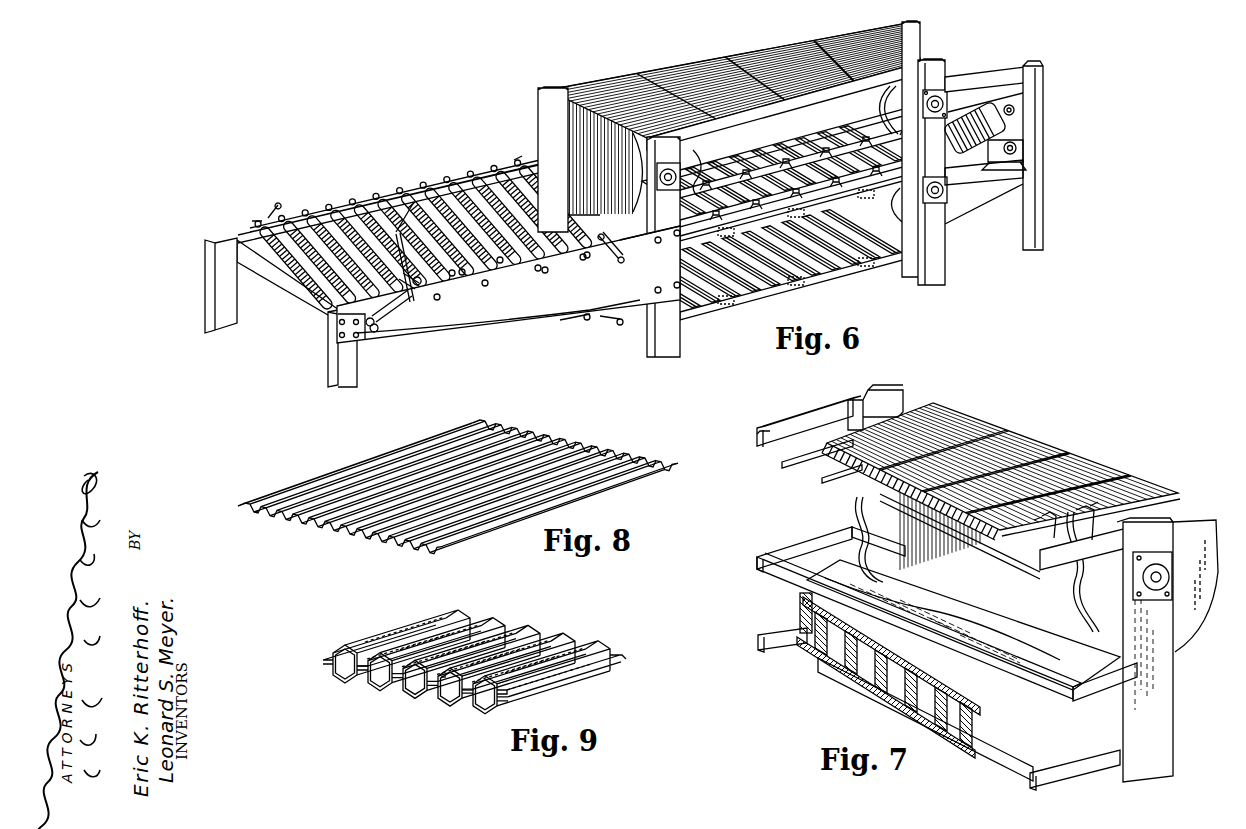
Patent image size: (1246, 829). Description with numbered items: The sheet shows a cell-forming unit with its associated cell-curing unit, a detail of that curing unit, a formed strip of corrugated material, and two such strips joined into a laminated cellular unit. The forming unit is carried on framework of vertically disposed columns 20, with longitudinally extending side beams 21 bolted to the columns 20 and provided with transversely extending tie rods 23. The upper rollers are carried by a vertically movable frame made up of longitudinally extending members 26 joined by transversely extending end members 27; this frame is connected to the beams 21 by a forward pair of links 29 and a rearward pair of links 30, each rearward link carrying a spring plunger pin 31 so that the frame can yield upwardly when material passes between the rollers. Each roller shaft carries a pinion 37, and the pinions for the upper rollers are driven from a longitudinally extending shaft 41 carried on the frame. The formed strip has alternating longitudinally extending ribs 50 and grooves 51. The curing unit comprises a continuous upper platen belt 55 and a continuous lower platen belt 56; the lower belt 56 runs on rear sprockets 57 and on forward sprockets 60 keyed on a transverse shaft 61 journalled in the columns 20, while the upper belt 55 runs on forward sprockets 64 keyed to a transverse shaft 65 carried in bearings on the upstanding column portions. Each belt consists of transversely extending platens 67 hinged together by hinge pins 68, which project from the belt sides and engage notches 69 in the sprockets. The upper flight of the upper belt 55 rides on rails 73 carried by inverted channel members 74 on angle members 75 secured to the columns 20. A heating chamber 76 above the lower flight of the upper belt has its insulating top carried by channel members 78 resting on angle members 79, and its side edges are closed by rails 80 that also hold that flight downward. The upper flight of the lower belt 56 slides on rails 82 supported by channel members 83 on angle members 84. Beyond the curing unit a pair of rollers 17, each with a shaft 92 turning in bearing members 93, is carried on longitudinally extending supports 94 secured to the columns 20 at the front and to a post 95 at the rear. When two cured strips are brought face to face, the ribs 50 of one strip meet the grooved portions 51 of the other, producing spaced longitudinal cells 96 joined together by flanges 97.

In FIG. 6, the rollers 17 is at (965, 130).
In FIG. 6, the columns 20 is at (211, 299).
In FIG. 7, the columns 20 is at (1160, 700).
In FIG. 6, the side beams 21 is at (482, 314).
In FIG. 6, the tie rods 23 is at (545, 273).
In FIG. 6, the longitudinally extending members 26 is at (464, 275).
In FIG. 6, the end members 27 is at (300, 280).
In FIG. 6, the forward links 29 is at (613, 249).
In FIG. 6, the rearward links 30 is at (405, 307).
In FIG. 6, the pin 31 is at (384, 320).
In FIG. 6, the pinion 37 is at (337, 208).
In FIG. 6, the shaft 41 is at (394, 190).
In FIG. 8, the ribs 50 is at (262, 497).
In FIG. 9, the ribs 50 is at (345, 648).
In FIG. 8, the grooves 51 is at (257, 513).
In FIG. 9, the grooves 51 is at (362, 653).
In FIG. 6, the upper platen belt 55 is at (689, 68).
In FIG. 6, the lower platen belt 56 is at (816, 266).
In FIG. 6, the sprockets 57 is at (612, 318).
In FIG. 6, the sprockets 60 is at (900, 191).
In FIG. 6, the shaft 61 is at (944, 199).
In FIG. 6, the forward sprockets 64 is at (894, 118).
In FIG. 7, the forward sprockets 64 is at (1175, 640).
In FIG. 6, the upper bearing 65 is at (942, 100).
In FIG. 7, the upper bearing 65 is at (1169, 577).
In FIG. 6, the platens 67 is at (640, 94).
In FIG. 7, the platens 67 is at (838, 442).
In FIG. 7, the hinge pins 68 is at (1046, 520).
In FIG. 7, the notches 69 is at (1088, 516).
In FIG. 7, the rails 73 is at (800, 469).
In FIG. 7, the inverted channel members 74 is at (785, 457).
In FIG. 6, the angle members 75 is at (702, 136).
In FIG. 7, the angle members 75 is at (757, 438).
In FIG. 7, the heating chamber 76 is at (963, 667).
In FIG. 7, the channel members 78 is at (780, 578).
In FIG. 6, the angle members 79 is at (831, 159).
In FIG. 7, the angle members 79 is at (805, 552).
In FIG. 7, the rails 80 is at (799, 601).
In FIG. 7, the rails 82 is at (812, 659).
In FIG. 7, the channel members 83 is at (775, 641).
In FIG. 6, the angle members 84 is at (690, 235).
In FIG. 7, the angle members 84 is at (1072, 770).
In FIG. 6, the shaft 92 is at (1017, 120).
In FIG. 6, the bearing members 93 is at (1014, 106).
In FIG. 6, the supports 94 is at (995, 80).
In FIG. 6, the post 95 is at (1040, 195).
In FIG. 9, the cells 96 is at (445, 690).
In FIG. 9, the flanges 97 is at (467, 697).